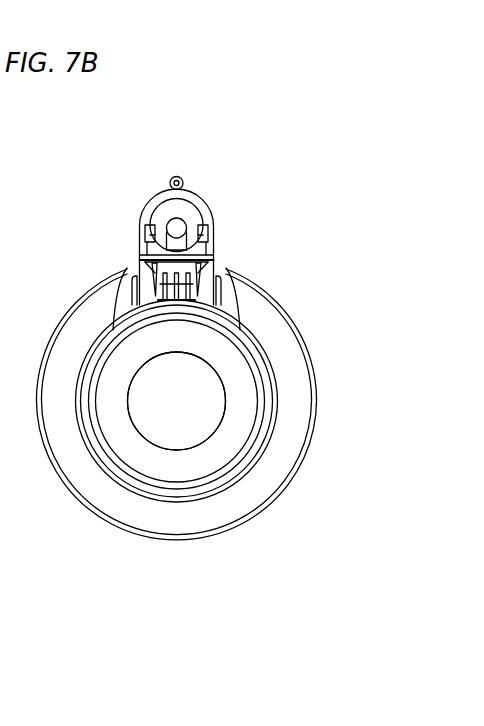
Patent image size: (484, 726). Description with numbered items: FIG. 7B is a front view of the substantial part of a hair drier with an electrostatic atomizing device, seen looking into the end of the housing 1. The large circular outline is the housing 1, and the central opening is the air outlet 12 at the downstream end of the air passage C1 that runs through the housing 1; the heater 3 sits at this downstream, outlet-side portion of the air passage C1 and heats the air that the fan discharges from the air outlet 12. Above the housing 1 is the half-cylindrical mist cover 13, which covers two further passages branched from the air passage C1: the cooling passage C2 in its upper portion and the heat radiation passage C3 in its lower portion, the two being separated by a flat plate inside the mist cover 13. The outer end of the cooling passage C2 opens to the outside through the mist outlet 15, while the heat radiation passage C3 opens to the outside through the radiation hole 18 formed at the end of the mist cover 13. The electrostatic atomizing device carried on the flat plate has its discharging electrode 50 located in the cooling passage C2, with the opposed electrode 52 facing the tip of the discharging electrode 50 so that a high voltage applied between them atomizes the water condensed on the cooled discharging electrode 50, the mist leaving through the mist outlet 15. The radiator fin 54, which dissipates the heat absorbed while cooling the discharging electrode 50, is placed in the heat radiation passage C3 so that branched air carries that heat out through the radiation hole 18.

The housing 1 is at (292, 322).
The heater 3 is at (130, 450).
The air outlet 12 is at (202, 407).
The air passage C1 is at (168, 407).
The mist cover 13 is at (148, 200).
The mist outlet 15 is at (182, 215).
The cooling passage C2 is at (172, 217).
The discharging electrode 50 is at (155, 215).
The opposed electrode 52 is at (200, 220).
The radiation hole 18 is at (140, 255).
The heat radiation passage C3 is at (148, 274).
The radiator fin 54 is at (218, 272).